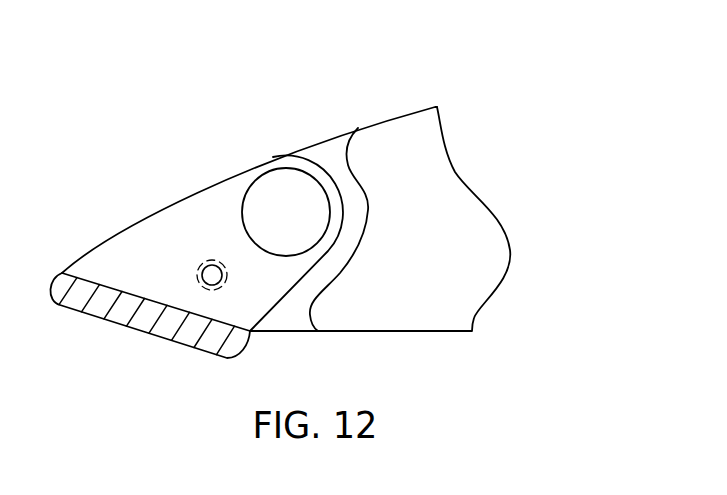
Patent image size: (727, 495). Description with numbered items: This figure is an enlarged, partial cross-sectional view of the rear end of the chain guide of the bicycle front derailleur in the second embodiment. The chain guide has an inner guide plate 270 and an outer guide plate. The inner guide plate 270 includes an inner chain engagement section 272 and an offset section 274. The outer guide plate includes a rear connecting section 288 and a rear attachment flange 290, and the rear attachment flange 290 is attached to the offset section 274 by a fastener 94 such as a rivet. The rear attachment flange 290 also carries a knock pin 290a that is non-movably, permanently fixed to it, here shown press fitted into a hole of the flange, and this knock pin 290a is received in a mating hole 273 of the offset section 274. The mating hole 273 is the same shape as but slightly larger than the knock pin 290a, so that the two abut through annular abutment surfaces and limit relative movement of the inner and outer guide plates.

The inner guide plate 270 is at (420, 103).
The inner chain engagement section 272 is at (465, 233).
The offset section 274 is at (290, 310).
The rear connecting section 288 is at (133, 313).
The rear attachment flange 290 is at (221, 201).
The knock pin 290a is at (212, 277).
The mating hole 273 is at (200, 264).
The fastener 94 is at (290, 190).